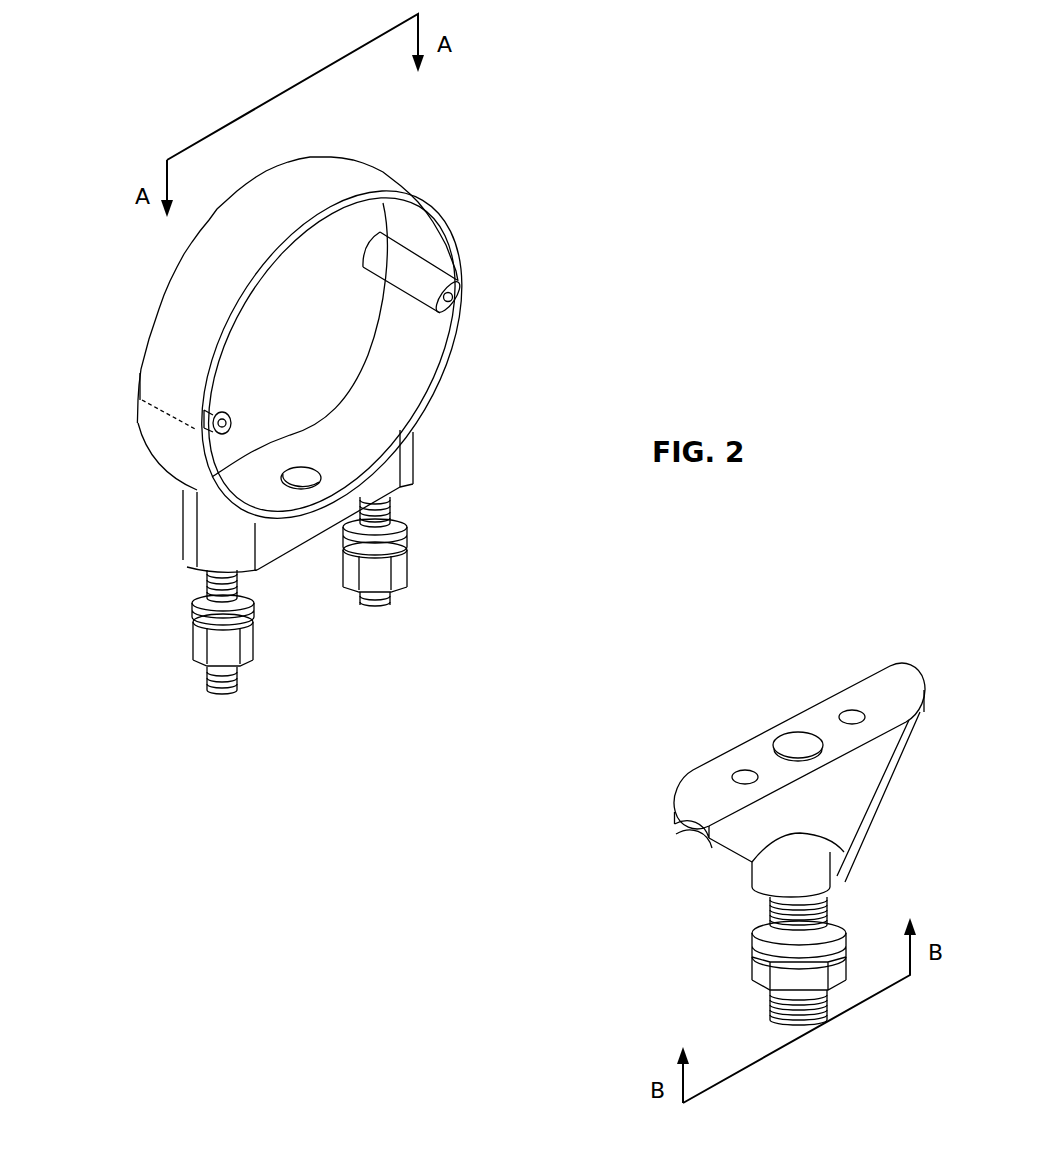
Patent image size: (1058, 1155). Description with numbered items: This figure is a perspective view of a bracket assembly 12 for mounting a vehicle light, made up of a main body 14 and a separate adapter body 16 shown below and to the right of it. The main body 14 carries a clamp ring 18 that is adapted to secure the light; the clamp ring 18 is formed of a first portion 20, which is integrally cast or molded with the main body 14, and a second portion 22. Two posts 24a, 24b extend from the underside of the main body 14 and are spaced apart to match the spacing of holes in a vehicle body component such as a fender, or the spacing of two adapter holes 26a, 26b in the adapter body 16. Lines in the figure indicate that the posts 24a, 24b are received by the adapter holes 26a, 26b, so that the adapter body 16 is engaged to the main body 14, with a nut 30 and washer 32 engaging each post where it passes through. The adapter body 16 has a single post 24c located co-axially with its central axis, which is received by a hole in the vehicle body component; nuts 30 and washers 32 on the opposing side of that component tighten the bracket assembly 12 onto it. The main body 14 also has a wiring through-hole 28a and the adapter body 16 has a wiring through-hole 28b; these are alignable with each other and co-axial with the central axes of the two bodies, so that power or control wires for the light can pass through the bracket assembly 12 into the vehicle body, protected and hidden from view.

The bracket assembly 12 is at (546, 945).
The main body 14 is at (444, 462).
The adapter body 16 is at (693, 854).
The clamp ring 18 is at (280, 359).
The first portion 20 is at (153, 435).
The second portion 22 is at (157, 322).
The post 24a is at (743, 758).
The post 24b is at (848, 683).
The post 24c is at (772, 1003).
The adapter hole 26a is at (740, 773).
The adapter hole 26b is at (855, 715).
The wiring through-hole 28a is at (303, 473).
The wiring through-hole 28b is at (800, 753).
The nut 30 is at (195, 653).
The washer 32 is at (197, 597).